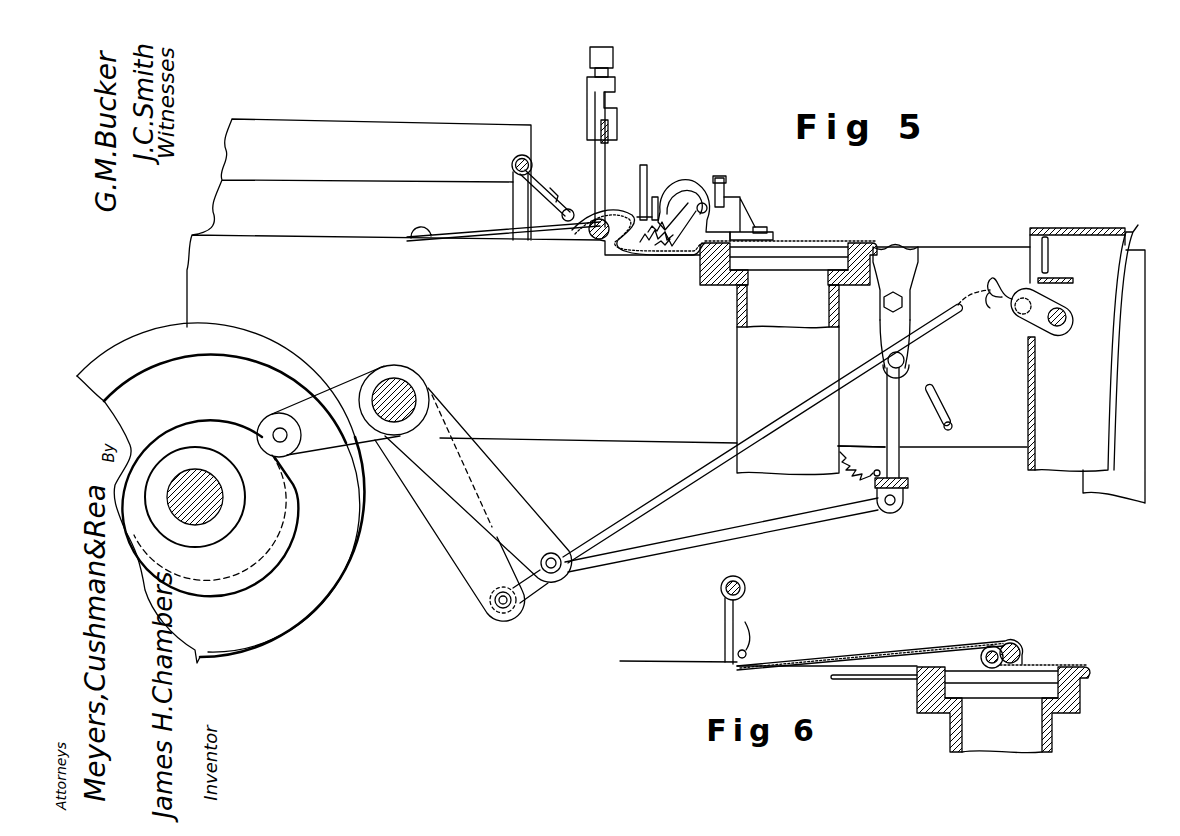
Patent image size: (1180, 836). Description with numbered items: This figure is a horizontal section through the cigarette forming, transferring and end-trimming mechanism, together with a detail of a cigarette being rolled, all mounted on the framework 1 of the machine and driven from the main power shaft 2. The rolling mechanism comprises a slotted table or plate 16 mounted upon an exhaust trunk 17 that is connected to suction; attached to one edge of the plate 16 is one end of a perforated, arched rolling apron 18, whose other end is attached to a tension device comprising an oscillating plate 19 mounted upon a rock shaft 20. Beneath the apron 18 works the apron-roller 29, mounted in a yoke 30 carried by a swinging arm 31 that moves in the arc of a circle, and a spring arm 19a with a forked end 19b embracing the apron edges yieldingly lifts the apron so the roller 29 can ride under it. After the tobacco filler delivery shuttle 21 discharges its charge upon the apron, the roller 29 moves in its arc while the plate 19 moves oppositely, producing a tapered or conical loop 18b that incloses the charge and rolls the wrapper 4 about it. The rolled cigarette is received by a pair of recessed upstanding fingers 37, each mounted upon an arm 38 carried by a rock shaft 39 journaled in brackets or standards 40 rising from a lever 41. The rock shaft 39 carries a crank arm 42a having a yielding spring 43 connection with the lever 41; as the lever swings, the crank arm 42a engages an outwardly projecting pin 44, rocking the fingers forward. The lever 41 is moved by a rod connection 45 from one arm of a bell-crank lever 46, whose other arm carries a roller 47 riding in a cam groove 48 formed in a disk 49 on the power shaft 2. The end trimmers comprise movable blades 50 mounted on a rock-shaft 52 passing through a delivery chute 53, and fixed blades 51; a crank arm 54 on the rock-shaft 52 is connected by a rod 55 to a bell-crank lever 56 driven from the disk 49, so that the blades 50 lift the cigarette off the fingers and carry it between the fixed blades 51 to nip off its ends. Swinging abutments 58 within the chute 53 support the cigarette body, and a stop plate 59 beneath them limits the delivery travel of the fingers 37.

In FIG. 5, the framework 1 is at (608, 283).
In FIG. 5, the main power shaft 2 is at (225, 497).
In FIG. 5, the wrapper 4 is at (812, 243).
In FIG. 6, the wrapper 4 is at (1062, 667).
In FIG. 5, the slotted table or plate 16 is at (858, 244).
In FIG. 6, the slotted table or plate 16 is at (961, 675).
In FIG. 5, the exhaust trunk 17 is at (788, 380).
In FIG. 6, the exhaust trunk 17 is at (1002, 736).
In FIG. 5, the rolling apron 18 is at (622, 248).
In FIG. 6, the rolling apron 18 is at (846, 652).
In FIG. 6, the loop 18b is at (995, 646).
In FIG. 5, the oscillating plate 19 is at (542, 185).
In FIG. 6, the oscillating plate 19 is at (728, 623).
In FIG. 5, the spring arm 19a is at (483, 231).
In FIG. 5, the forked end 19b is at (638, 213).
In FIG. 5, the rock shaft 20 is at (511, 165).
In FIG. 6, the rock shaft 20 is at (722, 590).
In FIG. 5, the tobacco filler delivery shuttle 21 is at (685, 186).
In FIG. 5, the apron-roller 29 is at (592, 238).
In FIG. 6, the apron-roller 29 is at (1022, 650).
In FIG. 5, the yoke 30 is at (603, 160).
In FIG. 5, the swinging arm 31 is at (613, 57).
In FIG. 5, the upstanding fingers 37 is at (895, 283).
In FIG. 5, the arm 38 is at (886, 330).
In FIG. 5, the rock shaft 39 is at (905, 360).
In FIG. 5, the brackets or standards 40 is at (885, 405).
In FIG. 5, the lever 41 is at (911, 482).
In FIG. 5, the crank arm 42a is at (862, 445).
In FIG. 5, the spring 43 is at (855, 472).
In FIG. 5, the pin 44 is at (956, 424).
In FIG. 5, the rod connection 45 is at (760, 530).
In FIG. 5, the bell-crank lever 46 is at (518, 510).
In FIG. 5, the roller 47 is at (268, 418).
In FIG. 5, the cam groove 48 is at (227, 508).
In FIG. 5, the disk 49 is at (345, 572).
In FIG. 5, the movable blades 50 is at (1010, 313).
In FIG. 5, the fixed blades 51 is at (1032, 250).
In FIG. 5, the rock-shaft 52 is at (1064, 321).
In FIG. 5, the delivery chute 53 is at (1086, 364).
In FIG. 5, the crank arm 54 is at (1065, 295).
In FIG. 5, the rod 55 is at (810, 405).
In FIG. 5, the bell-crank lever 56 is at (468, 568).
In FIG. 5, the swinging abutments 58 is at (1053, 260).
In FIG. 5, the stop plate 59 is at (1075, 277).